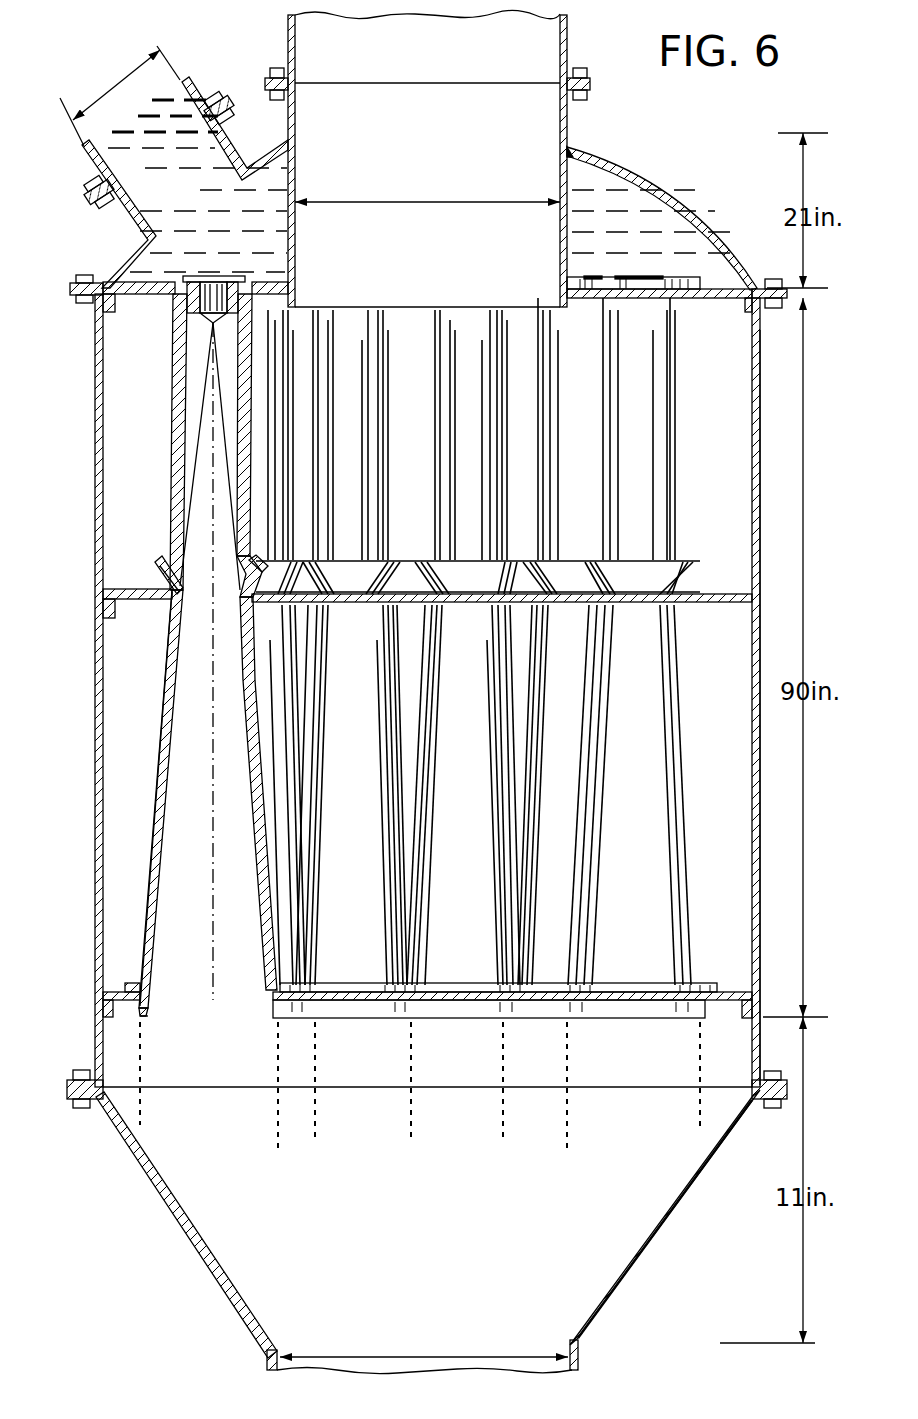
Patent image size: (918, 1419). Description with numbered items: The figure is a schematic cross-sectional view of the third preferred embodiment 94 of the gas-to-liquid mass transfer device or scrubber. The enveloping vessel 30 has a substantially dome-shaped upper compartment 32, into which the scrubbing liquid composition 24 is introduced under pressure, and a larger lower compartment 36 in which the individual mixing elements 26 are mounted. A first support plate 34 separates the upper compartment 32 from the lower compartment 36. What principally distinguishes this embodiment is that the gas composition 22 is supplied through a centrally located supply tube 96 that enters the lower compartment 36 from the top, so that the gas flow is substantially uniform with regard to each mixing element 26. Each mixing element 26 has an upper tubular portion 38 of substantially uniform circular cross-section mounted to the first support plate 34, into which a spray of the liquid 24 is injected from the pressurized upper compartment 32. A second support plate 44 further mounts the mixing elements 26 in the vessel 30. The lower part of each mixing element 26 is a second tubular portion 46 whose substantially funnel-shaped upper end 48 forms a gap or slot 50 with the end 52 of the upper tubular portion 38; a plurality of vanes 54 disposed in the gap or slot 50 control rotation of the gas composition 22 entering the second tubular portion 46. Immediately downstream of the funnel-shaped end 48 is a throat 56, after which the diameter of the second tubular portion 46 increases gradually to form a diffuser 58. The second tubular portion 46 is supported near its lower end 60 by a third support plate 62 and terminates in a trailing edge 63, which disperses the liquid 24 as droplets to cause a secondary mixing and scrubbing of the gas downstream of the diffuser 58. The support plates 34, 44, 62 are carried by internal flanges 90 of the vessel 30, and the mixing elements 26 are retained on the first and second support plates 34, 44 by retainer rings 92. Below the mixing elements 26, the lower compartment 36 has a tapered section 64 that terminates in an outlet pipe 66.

The gas composition 22 is at (345, 35).
The centrally located supply tube 96 is at (569, 30).
The third preferred embodiment 94 is at (110, 256).
The dome-shaped upper compartment 32 is at (592, 165).
The liquid composition 24 is at (618, 207).
The first support plate 34 is at (706, 296).
The retainer rings 92 is at (735, 287).
The internal flanges 90 is at (110, 306).
The enveloping vessel 30 is at (757, 377).
The lower compartment 36 is at (757, 464).
The upper tubular portion 38 is at (174, 418).
The end of the first tubular portion 52 is at (180, 565).
The throat 56 is at (207, 580).
The vanes 54 is at (170, 560).
The funnel-shaped upper end 48 is at (160, 565).
The mixing element 26 is at (257, 341).
The gap or slot 50 is at (398, 560).
The second support plate 44 is at (705, 596).
The second tubular portion 46 is at (166, 708).
The diffuser 58 is at (160, 784).
The lower end 60 is at (146, 978).
The third support plate 62 is at (122, 990).
The trailing edge 63 is at (140, 1018).
The tapered section 64 is at (216, 1297).
The outlet pipe 66 is at (265, 1366).